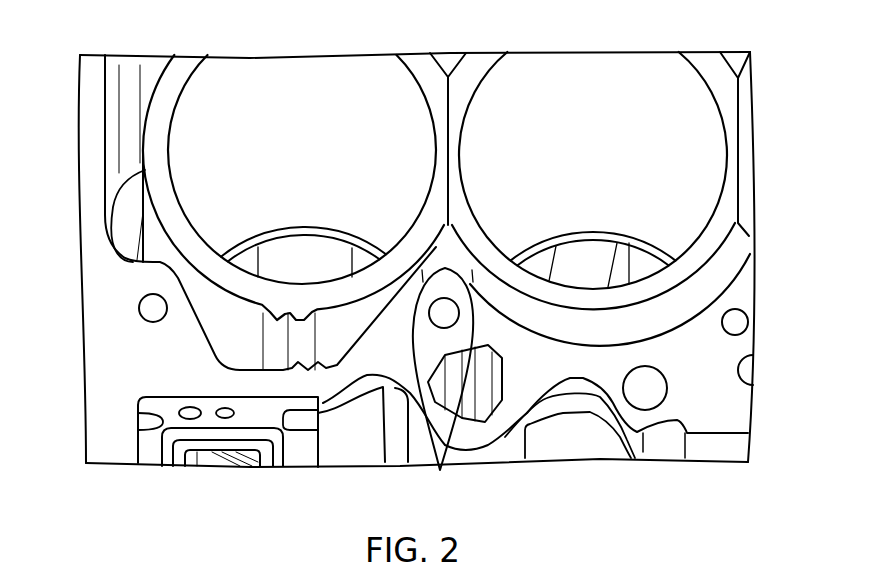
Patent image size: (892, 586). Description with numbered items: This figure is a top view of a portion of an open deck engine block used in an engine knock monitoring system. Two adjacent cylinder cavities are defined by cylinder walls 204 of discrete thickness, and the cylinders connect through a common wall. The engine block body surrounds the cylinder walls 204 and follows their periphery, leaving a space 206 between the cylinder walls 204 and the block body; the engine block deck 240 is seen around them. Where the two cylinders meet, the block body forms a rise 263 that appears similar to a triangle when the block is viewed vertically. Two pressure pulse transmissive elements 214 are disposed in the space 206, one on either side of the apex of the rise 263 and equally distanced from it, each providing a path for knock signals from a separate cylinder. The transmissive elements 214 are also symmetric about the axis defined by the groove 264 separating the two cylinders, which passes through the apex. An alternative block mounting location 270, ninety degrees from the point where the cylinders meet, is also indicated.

The cylinder wall 204 is at (722, 212).
The space 206 is at (712, 278).
The pressure pulse transmissive element 214 is at (440, 468).
The engine block deck 240 is at (723, 360).
The rise 263 is at (453, 288).
The groove 264 is at (447, 107).
The block mounting location 270 is at (575, 335).